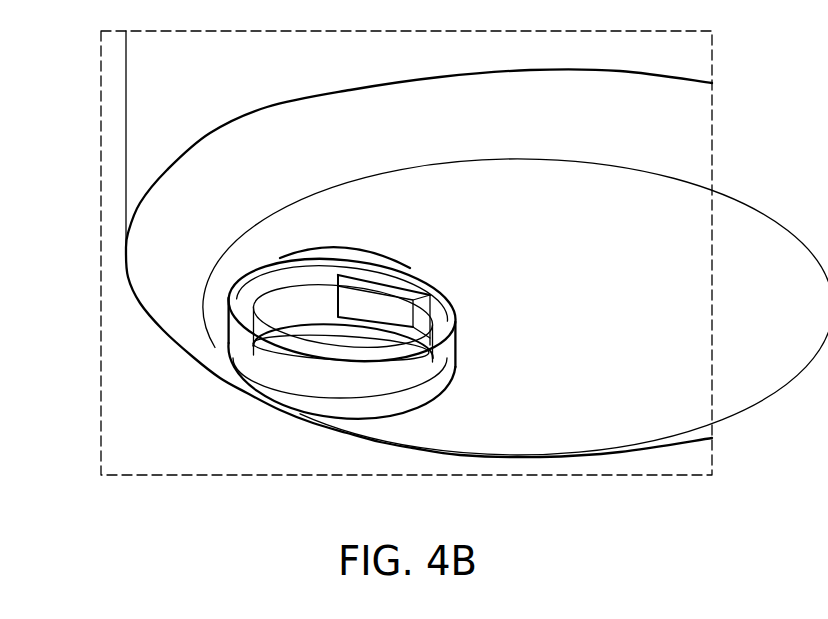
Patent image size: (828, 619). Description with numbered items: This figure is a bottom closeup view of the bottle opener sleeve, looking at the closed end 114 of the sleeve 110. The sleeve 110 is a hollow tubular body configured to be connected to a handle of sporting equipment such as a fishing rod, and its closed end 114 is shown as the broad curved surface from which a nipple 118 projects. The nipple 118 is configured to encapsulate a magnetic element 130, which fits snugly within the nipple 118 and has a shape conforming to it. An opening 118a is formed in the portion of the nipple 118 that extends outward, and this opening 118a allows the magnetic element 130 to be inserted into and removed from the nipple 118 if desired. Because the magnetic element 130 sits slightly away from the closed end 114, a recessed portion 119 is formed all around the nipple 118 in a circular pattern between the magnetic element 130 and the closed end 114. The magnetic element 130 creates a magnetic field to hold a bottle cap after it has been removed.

The sleeve 110 is at (126, 105).
The closed end 114 is at (158, 260).
The nipple 118 is at (228, 345).
The opening 118a is at (428, 296).
The recessed portion 119 is at (372, 252).
The magnetic element 130 is at (407, 375).